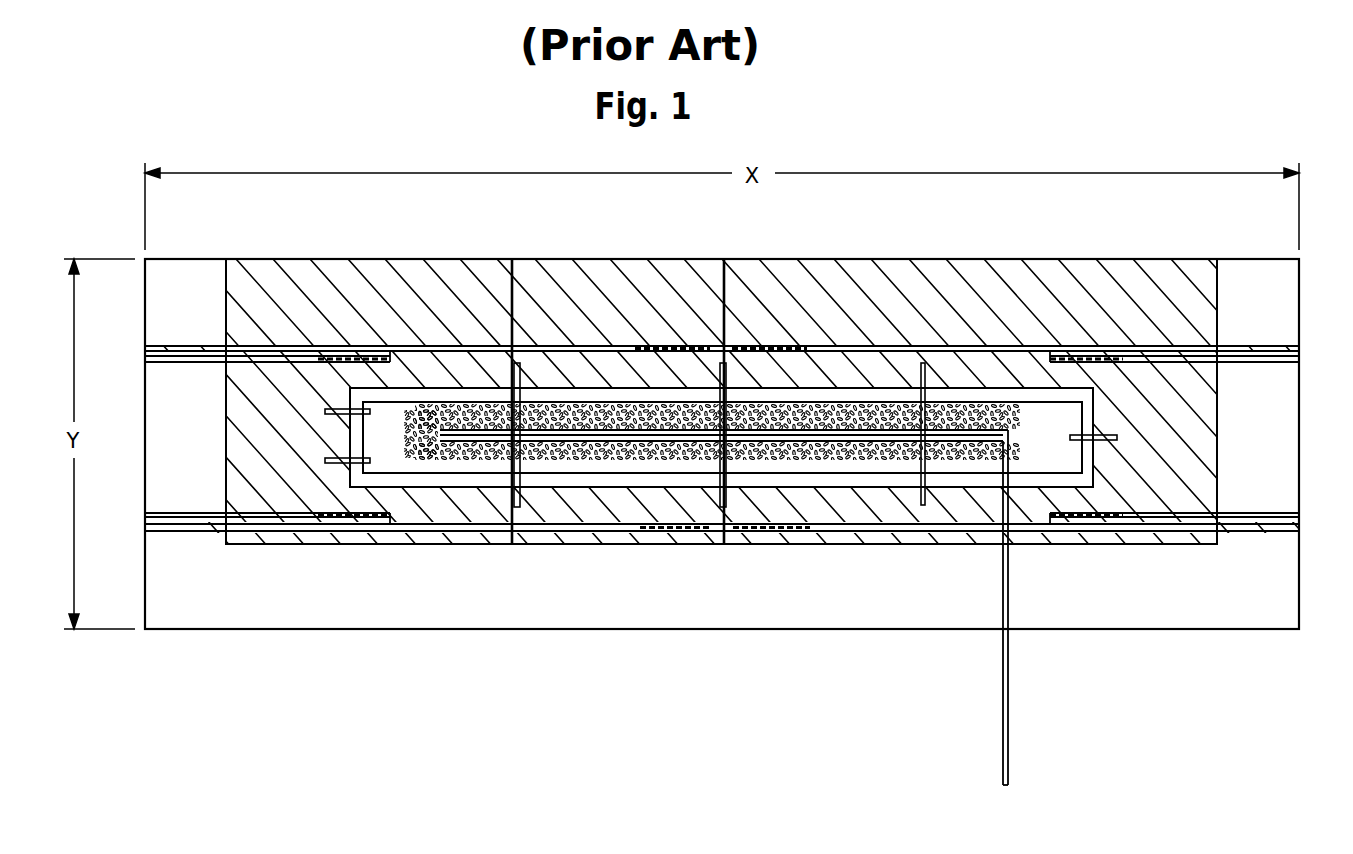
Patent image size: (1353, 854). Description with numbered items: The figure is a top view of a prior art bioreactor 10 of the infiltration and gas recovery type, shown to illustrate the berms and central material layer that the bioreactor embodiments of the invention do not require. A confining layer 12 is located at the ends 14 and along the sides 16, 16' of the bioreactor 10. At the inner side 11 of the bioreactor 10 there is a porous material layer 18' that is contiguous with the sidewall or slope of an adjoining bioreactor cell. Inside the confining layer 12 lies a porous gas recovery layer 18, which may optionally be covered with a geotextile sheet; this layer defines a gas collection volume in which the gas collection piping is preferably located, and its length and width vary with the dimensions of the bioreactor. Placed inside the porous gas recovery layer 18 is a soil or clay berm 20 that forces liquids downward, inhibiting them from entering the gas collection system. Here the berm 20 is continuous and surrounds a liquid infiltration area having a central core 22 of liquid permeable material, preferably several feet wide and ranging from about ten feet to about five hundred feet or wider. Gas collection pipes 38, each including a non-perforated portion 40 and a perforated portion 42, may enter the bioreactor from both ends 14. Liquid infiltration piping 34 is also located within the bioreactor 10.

The bioreactor 10 is at (437, 629).
The inner side 11 is at (588, 307).
The confining layer 12 is at (217, 585).
The ends 14 is at (143, 320).
The sides 16 is at (721, 639).
The sides 16' is at (189, 225).
The porous gas recovery layer 18 is at (676, 493).
The porous material layer 18' is at (369, 236).
The berm 20 is at (972, 378).
The central core 22 is at (827, 473).
The liquid infiltration piping 34 is at (660, 455).
The gas collection pipes 38 is at (145, 527).
The non-perforated portion 40 is at (180, 531).
The perforated portion 42 is at (382, 358).